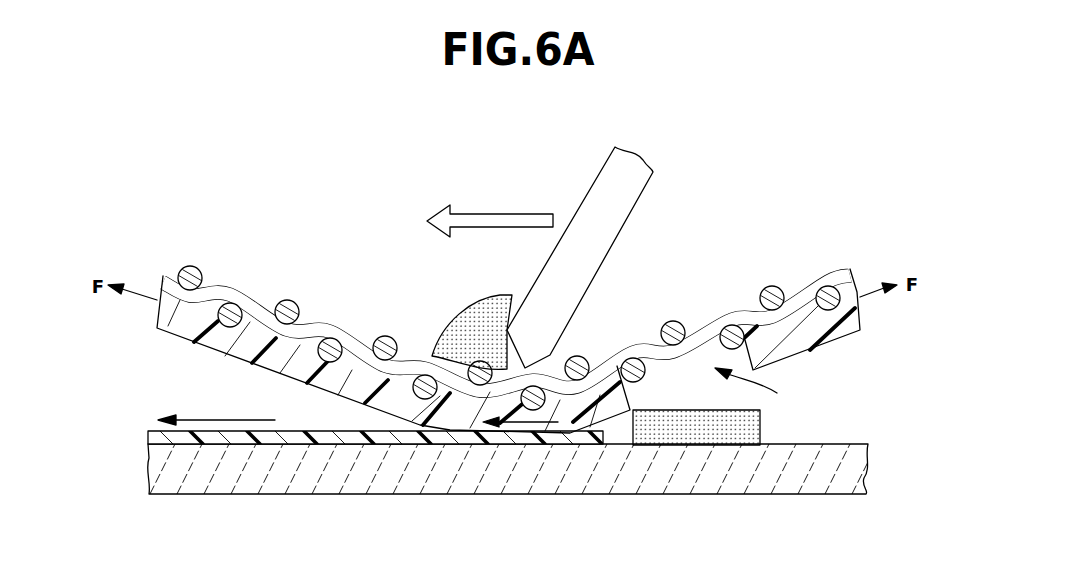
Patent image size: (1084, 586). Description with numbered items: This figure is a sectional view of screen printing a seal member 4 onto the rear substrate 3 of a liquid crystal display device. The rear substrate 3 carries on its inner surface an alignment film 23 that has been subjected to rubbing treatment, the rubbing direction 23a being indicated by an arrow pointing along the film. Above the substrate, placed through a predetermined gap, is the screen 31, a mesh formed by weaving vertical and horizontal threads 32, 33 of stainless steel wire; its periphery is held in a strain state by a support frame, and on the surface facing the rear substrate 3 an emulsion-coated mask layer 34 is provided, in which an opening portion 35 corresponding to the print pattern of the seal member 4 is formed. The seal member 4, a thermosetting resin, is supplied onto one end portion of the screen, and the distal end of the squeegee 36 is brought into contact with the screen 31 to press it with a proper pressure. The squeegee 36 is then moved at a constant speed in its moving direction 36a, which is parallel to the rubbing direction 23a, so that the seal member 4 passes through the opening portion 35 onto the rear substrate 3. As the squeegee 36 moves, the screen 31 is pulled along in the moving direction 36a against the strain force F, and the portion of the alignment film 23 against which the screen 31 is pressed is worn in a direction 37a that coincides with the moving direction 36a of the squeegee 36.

The rear substrate 3 is at (807, 473).
The seal member 4 is at (472, 313).
The alignment film 23 is at (380, 436).
The rubbing direction 23a is at (220, 417).
The screen 31 is at (518, 316).
The vertical threads 32 is at (673, 333).
The horizontal threads 33 is at (730, 313).
The mask layer 34 is at (820, 327).
The opening portion 35 is at (761, 391).
The squeegee 36 is at (613, 173).
The moving direction of the squeegee 36a is at (493, 210).
The wear direction 37a is at (517, 444).